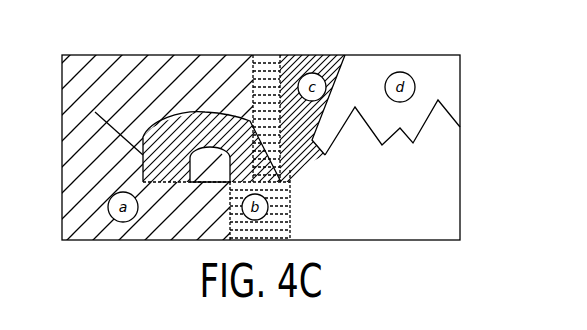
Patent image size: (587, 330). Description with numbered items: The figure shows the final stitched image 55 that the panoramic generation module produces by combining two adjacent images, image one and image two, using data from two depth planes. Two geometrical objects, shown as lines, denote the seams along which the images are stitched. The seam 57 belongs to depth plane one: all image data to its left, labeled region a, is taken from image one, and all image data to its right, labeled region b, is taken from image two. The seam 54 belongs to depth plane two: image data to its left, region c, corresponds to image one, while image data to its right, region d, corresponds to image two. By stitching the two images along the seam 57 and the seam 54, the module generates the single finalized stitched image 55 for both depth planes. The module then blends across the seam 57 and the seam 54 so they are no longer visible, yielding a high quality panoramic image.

The seam 54 is at (302, 155).
The final stitched image 55 is at (460, 105).
The seam 57 is at (290, 183).